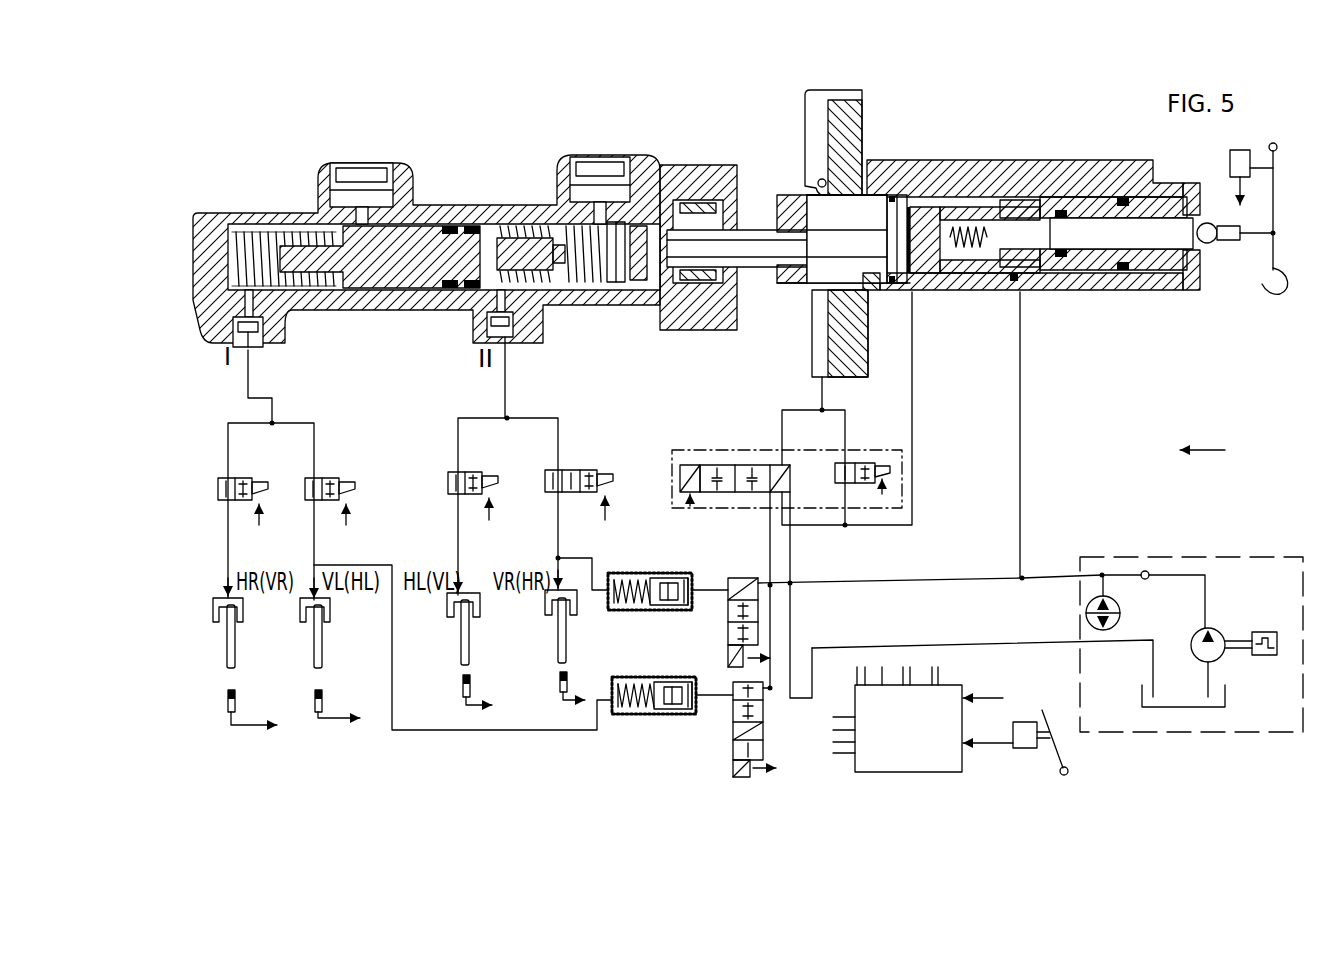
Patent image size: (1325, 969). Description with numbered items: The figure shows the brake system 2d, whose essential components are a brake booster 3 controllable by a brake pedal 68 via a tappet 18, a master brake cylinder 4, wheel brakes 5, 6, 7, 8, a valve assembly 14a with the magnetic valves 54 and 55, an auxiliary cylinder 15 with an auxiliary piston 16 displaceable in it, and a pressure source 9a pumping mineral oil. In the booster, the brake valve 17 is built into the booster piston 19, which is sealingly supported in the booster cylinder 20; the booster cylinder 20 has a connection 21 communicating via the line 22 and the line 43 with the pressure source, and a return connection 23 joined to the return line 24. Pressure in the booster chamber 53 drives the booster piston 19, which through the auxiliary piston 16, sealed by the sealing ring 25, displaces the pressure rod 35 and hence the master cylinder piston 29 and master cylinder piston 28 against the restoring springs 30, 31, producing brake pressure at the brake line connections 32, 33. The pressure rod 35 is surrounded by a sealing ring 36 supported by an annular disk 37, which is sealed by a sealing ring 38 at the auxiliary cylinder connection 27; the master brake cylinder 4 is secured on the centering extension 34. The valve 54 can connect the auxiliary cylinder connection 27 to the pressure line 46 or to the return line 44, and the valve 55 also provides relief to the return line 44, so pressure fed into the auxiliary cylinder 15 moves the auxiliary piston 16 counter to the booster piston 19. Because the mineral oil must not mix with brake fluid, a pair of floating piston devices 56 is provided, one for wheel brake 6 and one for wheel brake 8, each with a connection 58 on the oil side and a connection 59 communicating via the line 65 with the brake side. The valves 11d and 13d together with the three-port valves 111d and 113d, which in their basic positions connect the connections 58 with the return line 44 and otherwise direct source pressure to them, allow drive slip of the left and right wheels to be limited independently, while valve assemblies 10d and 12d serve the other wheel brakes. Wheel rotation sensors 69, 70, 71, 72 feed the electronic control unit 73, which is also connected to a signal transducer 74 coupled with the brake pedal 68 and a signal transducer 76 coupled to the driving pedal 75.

The brake system 2d is at (1218, 452).
The brake booster 3 is at (1123, 153).
The master brake cylinder 4 is at (476, 203).
The wheel brake 5 is at (478, 610).
The wheel brake 6 is at (572, 612).
The wheel brake 7 is at (242, 613).
The wheel brake 8 is at (331, 613).
The pressure source 9a is at (1182, 557).
The valve assembly 10d is at (243, 477).
The 2/2-way valve 11d is at (330, 477).
The valve assembly 12d is at (473, 471).
The 2/2-way valve 13d is at (570, 469).
The valve assembly 14a is at (858, 450).
The auxiliary cylinder 15 is at (872, 196).
The auxiliary piston 16 is at (923, 195).
The brake valve 17 is at (1037, 205).
The tappet 18 is at (1229, 236).
The booster piston 19 is at (1107, 195).
The booster cylinder 20 is at (1172, 278).
The connection 21 is at (1018, 292).
The line 22 is at (1021, 381).
The return connection 23 is at (913, 291).
The return line 24 is at (913, 391).
The sealing ring 25 is at (897, 194).
The auxiliary cylinder connection 27 is at (865, 328).
The master cylinder piston 28 is at (418, 245).
The master cylinder piston 29 is at (634, 238).
The restoring spring 30 is at (262, 240).
The restoring spring 31 is at (556, 230).
The brake line connection 32 is at (268, 343).
The brake line connection 33 is at (512, 338).
The centering extension 34 is at (690, 172).
The pressure rod 35 is at (838, 232).
The sealing ring 36 is at (768, 198).
The annular disk 37 is at (817, 193).
The sealing ring 38 is at (800, 292).
The line 43 is at (1052, 573).
The return line 44 is at (1036, 643).
The pressure line 46 is at (791, 572).
The booster chamber 53 is at (1058, 262).
The 3/3-way magnetic valve 54 is at (786, 464).
The 2/2-way magnetic valve 55 is at (836, 478).
The floating piston device 56 is at (651, 572).
The connection 58 is at (694, 583).
The connection 59 is at (609, 585).
The line 65 is at (578, 557).
The brake pedal 68 is at (1264, 233).
The wheel rotation sensor 69 is at (462, 686).
The wheel rotation sensor 70 is at (560, 684).
The wheel rotation sensor 71 is at (237, 697).
The wheel rotation sensor 72 is at (325, 697).
The electronic control unit 73 is at (946, 690).
The signal transducer 74 is at (1232, 158).
The driving pedal 75 is at (1049, 714).
The signal transducer 76 is at (1016, 757).
The 3/2-way valve 111d is at (736, 757).
The 3/2-way valve 113d is at (742, 577).